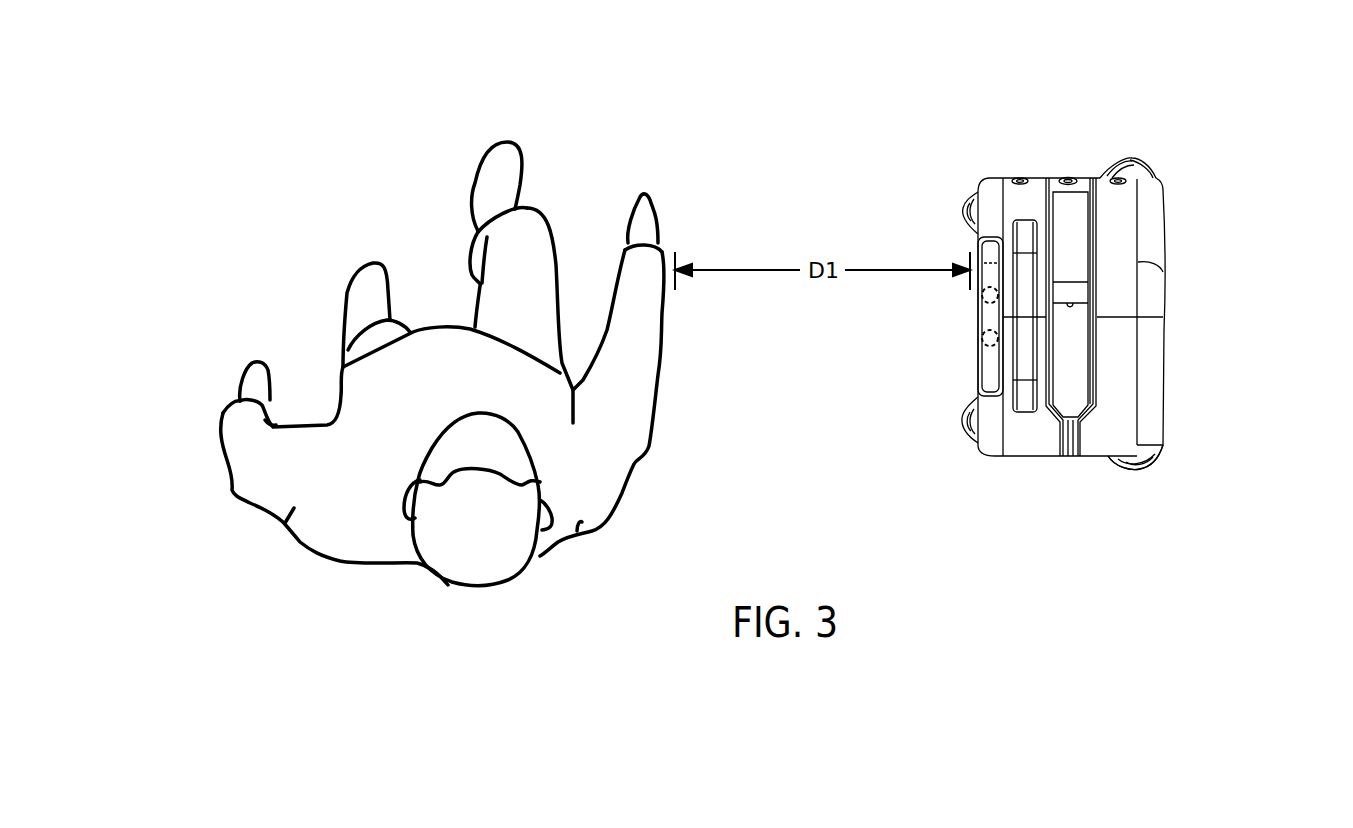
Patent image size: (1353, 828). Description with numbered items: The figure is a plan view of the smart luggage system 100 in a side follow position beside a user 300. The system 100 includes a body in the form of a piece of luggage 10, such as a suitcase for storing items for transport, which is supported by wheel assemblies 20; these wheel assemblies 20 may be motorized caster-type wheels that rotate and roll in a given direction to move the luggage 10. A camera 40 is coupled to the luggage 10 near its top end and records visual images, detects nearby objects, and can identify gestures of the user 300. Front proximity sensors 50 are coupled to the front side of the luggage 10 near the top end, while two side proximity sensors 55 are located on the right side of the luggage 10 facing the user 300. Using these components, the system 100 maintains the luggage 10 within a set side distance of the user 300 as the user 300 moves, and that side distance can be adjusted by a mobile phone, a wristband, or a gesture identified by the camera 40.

The smart luggage system 100 is at (1127, 307).
The luggage 10 is at (1111, 425).
The wheel assembly 20 is at (1137, 473).
The camera 40 is at (1068, 178).
The front proximity sensor 50 is at (1020, 178).
The side proximity sensor 55 is at (984, 296).
The user 300 is at (285, 520).